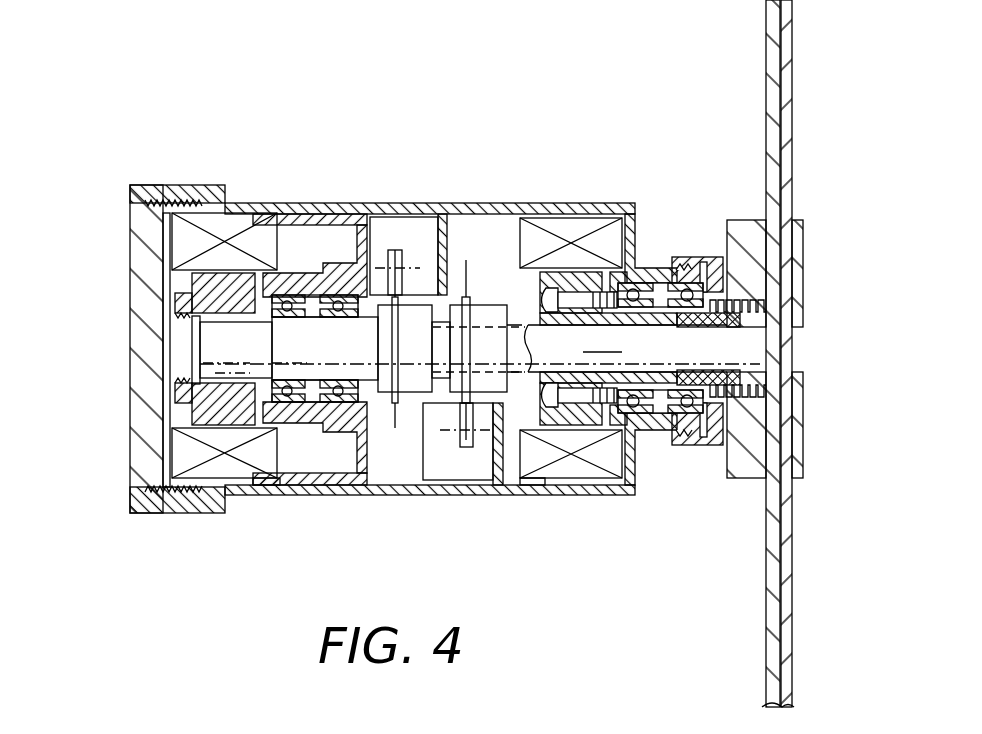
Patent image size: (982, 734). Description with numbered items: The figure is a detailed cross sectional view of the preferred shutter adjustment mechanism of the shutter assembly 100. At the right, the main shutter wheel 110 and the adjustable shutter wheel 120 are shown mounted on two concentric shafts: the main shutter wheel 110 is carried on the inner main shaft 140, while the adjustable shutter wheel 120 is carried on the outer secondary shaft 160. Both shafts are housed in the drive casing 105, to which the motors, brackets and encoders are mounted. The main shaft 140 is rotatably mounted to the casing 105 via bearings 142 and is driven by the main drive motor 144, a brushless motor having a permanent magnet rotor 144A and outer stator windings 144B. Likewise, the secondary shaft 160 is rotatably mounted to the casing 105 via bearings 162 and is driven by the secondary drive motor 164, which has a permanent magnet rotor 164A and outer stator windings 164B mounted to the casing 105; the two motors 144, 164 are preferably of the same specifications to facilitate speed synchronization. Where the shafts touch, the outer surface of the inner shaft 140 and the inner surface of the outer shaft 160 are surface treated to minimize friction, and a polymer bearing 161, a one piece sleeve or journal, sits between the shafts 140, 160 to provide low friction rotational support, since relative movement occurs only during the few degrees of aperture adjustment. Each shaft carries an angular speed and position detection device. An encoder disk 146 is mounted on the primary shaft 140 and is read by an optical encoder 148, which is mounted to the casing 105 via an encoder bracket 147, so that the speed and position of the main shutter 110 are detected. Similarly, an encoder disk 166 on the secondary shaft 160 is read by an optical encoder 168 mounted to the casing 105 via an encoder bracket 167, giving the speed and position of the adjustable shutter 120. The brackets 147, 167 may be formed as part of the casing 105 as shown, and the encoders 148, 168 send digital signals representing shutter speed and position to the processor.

The shutter assembly 100 is at (410, 85).
The drive casing 105 is at (260, 488).
The main shutter wheel 110 is at (788, 113).
The adjustable shutter wheel 120 is at (770, 82).
The main shaft 140 is at (480, 348).
The bearings 142 is at (300, 287).
The main drive motor 144 is at (235, 214).
The permanent magnet rotor 144A is at (198, 390).
The outer stator windings 144B is at (187, 455).
The encoder disk 146 is at (395, 428).
The encoder bracket 147 is at (443, 224).
The optical encoder 148 is at (412, 232).
The secondary shaft 160 is at (536, 376).
The polymer bearing 161 is at (682, 305).
The bearings 162 is at (660, 417).
The secondary drive motor 164 is at (562, 222).
The permanent magnet rotor 164A is at (573, 418).
The outer stator windings 164B is at (582, 468).
The encoder disk 166 is at (467, 265).
The encoder bracket 167 is at (497, 467).
The optical encoder 168 is at (437, 470).